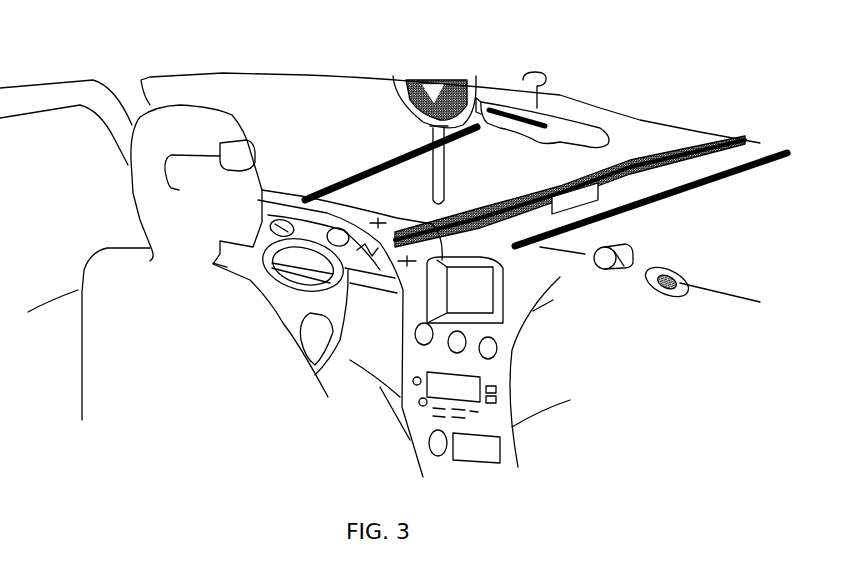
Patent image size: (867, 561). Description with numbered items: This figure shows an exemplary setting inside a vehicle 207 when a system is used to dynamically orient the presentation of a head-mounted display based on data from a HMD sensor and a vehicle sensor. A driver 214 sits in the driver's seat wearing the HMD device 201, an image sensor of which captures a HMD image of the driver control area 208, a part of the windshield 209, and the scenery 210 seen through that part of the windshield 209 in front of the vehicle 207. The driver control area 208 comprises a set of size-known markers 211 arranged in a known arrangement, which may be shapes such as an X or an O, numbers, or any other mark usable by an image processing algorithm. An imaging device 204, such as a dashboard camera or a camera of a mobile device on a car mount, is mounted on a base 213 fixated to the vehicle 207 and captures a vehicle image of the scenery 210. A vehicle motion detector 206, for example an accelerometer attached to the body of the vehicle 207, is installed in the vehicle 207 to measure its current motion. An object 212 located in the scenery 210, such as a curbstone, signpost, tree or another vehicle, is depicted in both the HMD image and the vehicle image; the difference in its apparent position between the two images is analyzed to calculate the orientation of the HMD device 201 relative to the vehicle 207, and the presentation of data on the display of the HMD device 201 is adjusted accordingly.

The HMD device 201 is at (221, 134).
The imaging device 204 is at (632, 249).
The vehicle motion detector 206 is at (688, 294).
The vehicle 207 is at (651, 265).
The driver control area 208 is at (308, 203).
The windshield 209 is at (450, 108).
The scenery 210 is at (525, 187).
The markers 211 is at (405, 248).
The object 212 is at (458, 99).
The base 213 is at (628, 263).
The driver 214 is at (131, 262).